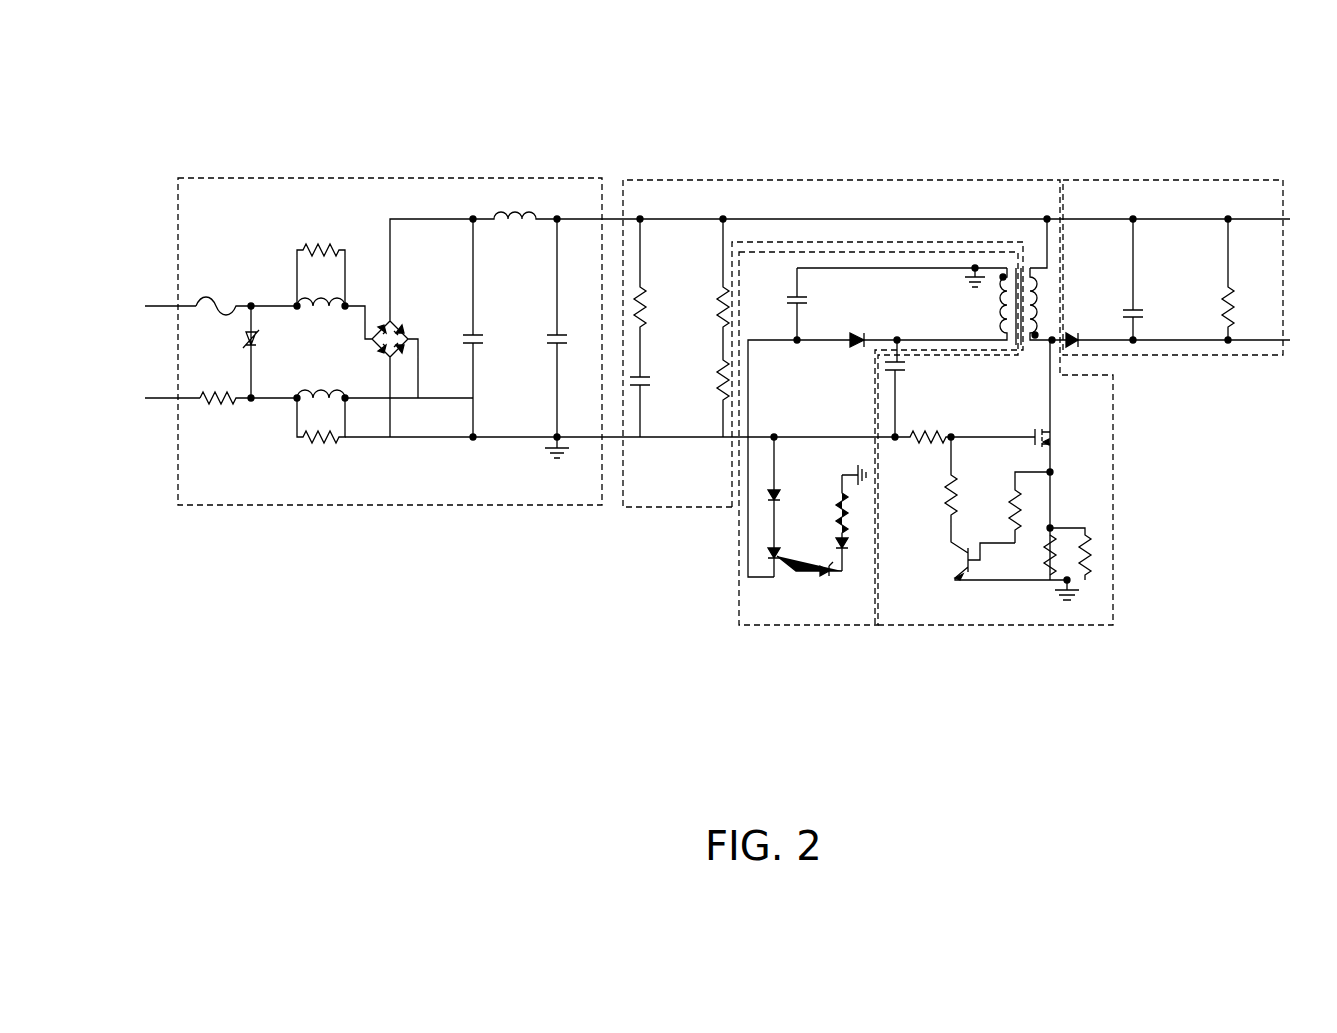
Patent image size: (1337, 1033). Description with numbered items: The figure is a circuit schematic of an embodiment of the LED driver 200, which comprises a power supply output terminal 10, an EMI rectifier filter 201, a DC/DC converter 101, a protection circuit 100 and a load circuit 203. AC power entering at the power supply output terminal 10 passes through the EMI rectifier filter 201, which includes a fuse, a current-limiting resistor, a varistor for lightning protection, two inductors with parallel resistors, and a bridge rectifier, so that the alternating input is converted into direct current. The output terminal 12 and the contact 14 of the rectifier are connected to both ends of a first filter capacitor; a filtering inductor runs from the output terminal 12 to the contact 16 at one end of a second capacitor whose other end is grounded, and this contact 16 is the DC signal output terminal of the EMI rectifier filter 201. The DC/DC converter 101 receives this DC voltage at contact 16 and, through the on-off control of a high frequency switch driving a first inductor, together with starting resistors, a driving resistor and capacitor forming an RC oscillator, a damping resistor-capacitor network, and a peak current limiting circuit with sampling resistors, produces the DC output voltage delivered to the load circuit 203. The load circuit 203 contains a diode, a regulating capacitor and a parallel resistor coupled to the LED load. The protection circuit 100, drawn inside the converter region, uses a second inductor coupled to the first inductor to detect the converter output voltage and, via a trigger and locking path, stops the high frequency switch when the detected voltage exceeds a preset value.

The LED driver 200 is at (713, 108).
The EMI rectifier filter 201 is at (324, 178).
The DC/DC converter 101 is at (809, 178).
The protection circuit 100 is at (813, 625).
The load circuit 203 is at (1194, 180).
The power supply output terminal 10 is at (162, 306).
The output terminal 12 is at (472, 219).
The contact 14 is at (473, 440).
The contact 16 is at (557, 219).